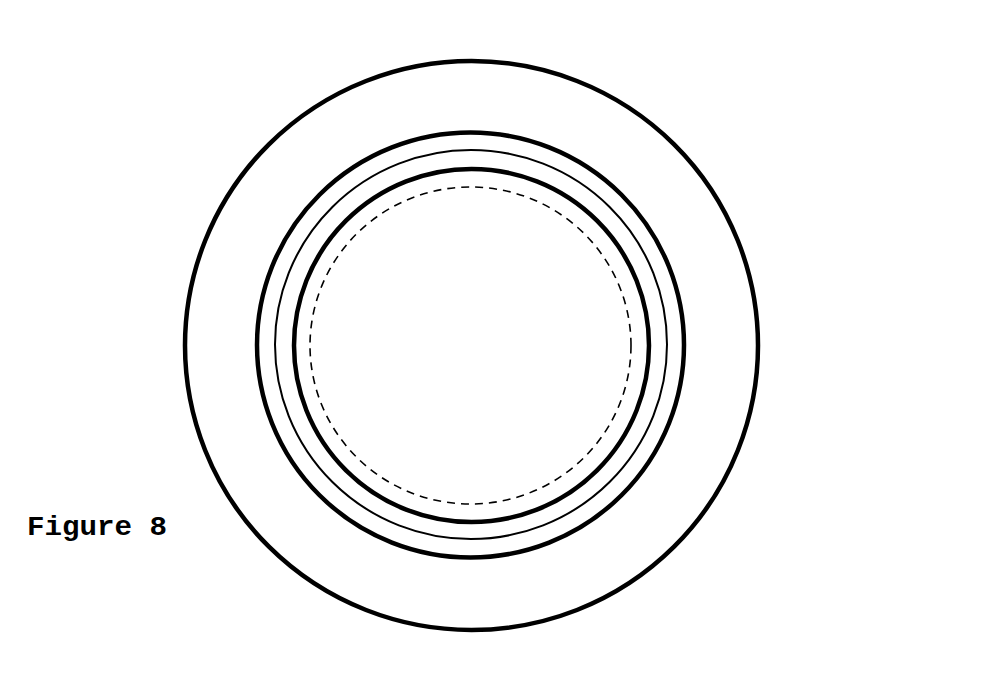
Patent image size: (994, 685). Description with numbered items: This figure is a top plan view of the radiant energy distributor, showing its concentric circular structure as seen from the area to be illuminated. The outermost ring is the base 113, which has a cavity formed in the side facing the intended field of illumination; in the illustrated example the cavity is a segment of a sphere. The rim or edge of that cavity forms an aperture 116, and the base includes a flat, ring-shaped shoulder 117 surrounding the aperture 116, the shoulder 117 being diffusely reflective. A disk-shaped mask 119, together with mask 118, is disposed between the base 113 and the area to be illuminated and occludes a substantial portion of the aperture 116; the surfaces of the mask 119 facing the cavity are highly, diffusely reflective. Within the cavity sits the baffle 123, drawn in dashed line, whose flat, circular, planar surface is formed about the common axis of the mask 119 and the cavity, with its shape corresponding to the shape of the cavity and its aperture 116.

The base 113 is at (757, 308).
The aperture 116 is at (670, 253).
The shoulder 117 is at (544, 320).
The mask 118 is at (670, 345).
The mask 119 is at (327, 240).
The baffle 123 is at (597, 438).